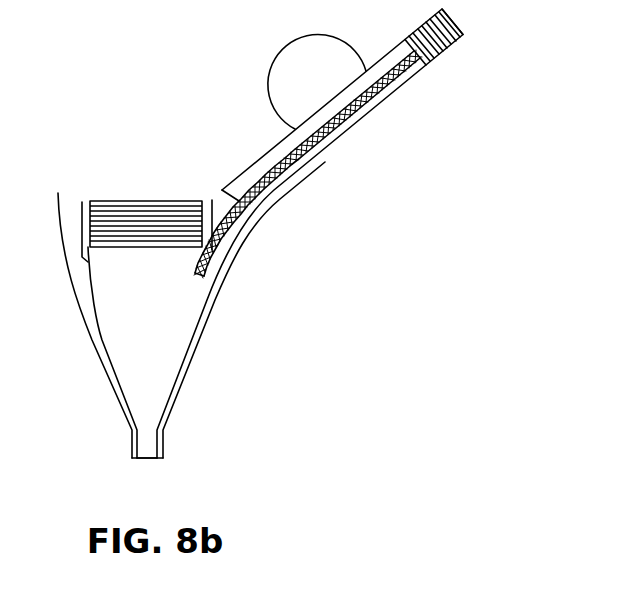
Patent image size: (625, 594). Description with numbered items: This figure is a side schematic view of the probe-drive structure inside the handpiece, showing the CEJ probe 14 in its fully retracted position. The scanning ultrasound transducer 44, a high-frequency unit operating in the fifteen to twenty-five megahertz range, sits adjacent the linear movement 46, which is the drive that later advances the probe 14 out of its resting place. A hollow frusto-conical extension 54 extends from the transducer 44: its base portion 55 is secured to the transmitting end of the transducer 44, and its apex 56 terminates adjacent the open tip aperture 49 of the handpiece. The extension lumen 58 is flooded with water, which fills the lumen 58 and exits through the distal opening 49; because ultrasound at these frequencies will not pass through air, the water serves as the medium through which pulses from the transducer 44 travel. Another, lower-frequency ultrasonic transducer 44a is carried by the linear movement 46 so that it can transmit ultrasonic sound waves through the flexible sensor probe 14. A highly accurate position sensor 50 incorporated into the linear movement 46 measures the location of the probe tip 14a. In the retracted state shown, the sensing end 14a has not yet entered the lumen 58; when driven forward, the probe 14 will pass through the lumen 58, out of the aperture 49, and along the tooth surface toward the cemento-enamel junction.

The CEJ finder probe 14 is at (230, 238).
The sensing end 14a is at (197, 279).
The scanning ultrasound transducer 44 is at (152, 213).
The ultrasonic transducer 44a is at (433, 55).
The linear movement 46 is at (322, 151).
The tip aperture 49 is at (145, 460).
The position sensor 50 is at (283, 70).
The hollow frusto-conical extension 54 is at (108, 392).
The base portion 55 is at (83, 242).
The apex 56 is at (132, 457).
The extension lumen 58 is at (132, 343).